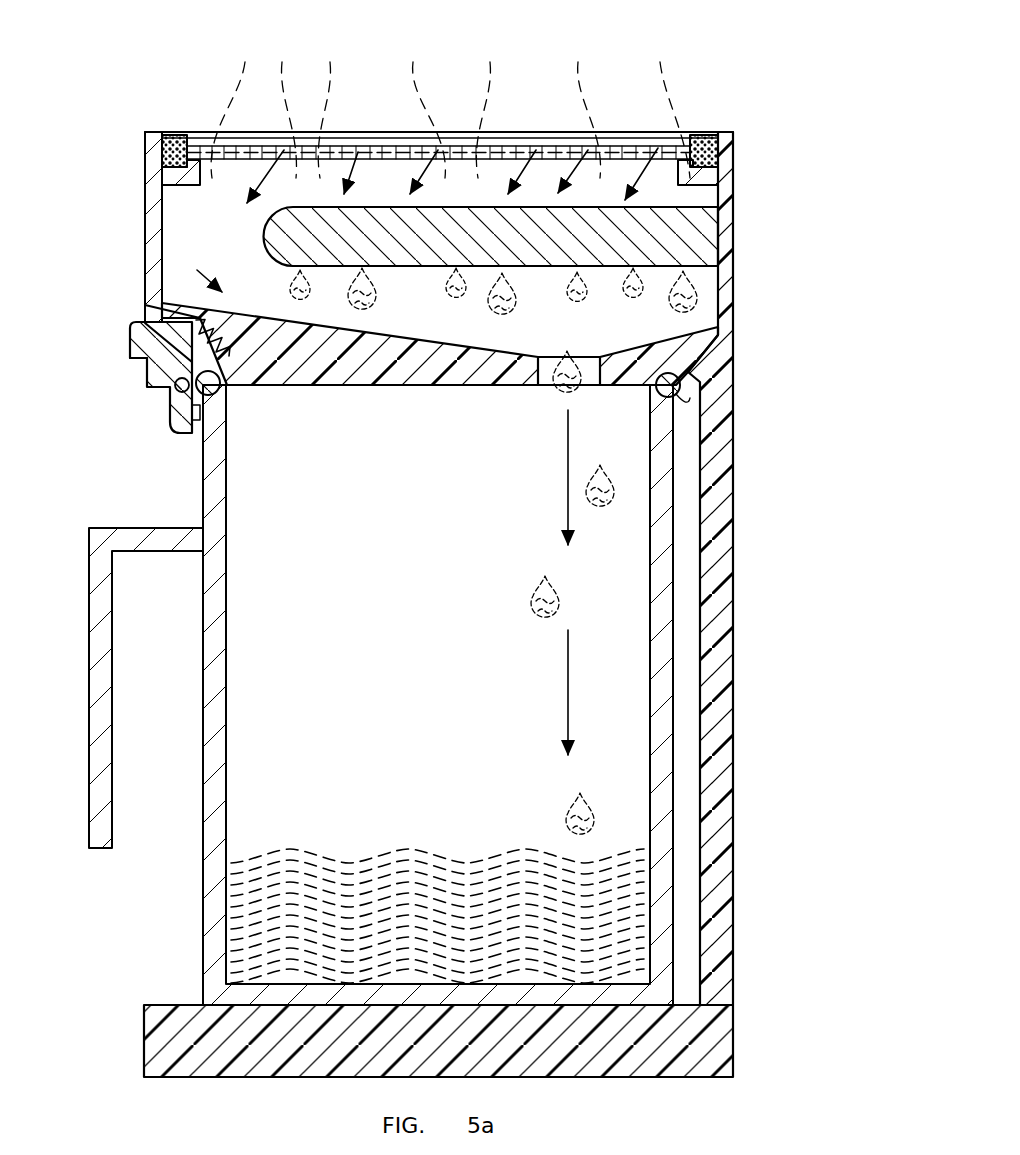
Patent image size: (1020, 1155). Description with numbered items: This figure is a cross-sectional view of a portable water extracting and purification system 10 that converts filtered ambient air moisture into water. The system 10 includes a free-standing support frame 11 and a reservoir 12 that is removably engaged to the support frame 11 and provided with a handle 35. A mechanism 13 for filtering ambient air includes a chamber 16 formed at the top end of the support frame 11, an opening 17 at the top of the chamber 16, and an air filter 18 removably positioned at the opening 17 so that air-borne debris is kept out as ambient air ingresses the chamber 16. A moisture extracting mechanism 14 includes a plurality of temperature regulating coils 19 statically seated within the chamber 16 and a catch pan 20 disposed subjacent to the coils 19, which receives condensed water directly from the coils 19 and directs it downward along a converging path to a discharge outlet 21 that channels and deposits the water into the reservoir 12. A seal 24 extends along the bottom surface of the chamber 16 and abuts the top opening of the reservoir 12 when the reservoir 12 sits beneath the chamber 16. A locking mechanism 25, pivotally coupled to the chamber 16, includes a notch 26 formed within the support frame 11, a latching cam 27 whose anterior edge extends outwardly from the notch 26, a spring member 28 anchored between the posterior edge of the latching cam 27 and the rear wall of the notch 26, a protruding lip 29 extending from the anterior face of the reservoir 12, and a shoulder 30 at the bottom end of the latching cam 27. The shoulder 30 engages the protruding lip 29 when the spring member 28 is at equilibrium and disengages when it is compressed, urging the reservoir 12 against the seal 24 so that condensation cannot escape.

The portable water extracting and purification system 10 is at (100, 187).
The support frame 11 is at (718, 572).
The reservoir 12 is at (205, 745).
The mechanism for filtering ambient air 13 is at (519, 130).
The mechanism for extracting moisture 14 is at (700, 279).
The chamber 16 is at (211, 178).
The opening 17 is at (690, 142).
The air filter 18 is at (372, 148).
The temperature regulating coils 19 is at (690, 235).
The catch pan 20 is at (263, 317).
The discharge outlet 21 is at (593, 385).
The seal 24 is at (676, 396).
The locking mechanism 25 is at (139, 374).
The notch 26 is at (133, 322).
The latching cam 27 is at (140, 352).
The spring member 28 is at (200, 315).
The protruding lip 29 is at (200, 432).
The shoulder 30 is at (185, 430).
The handle 35 is at (108, 672).